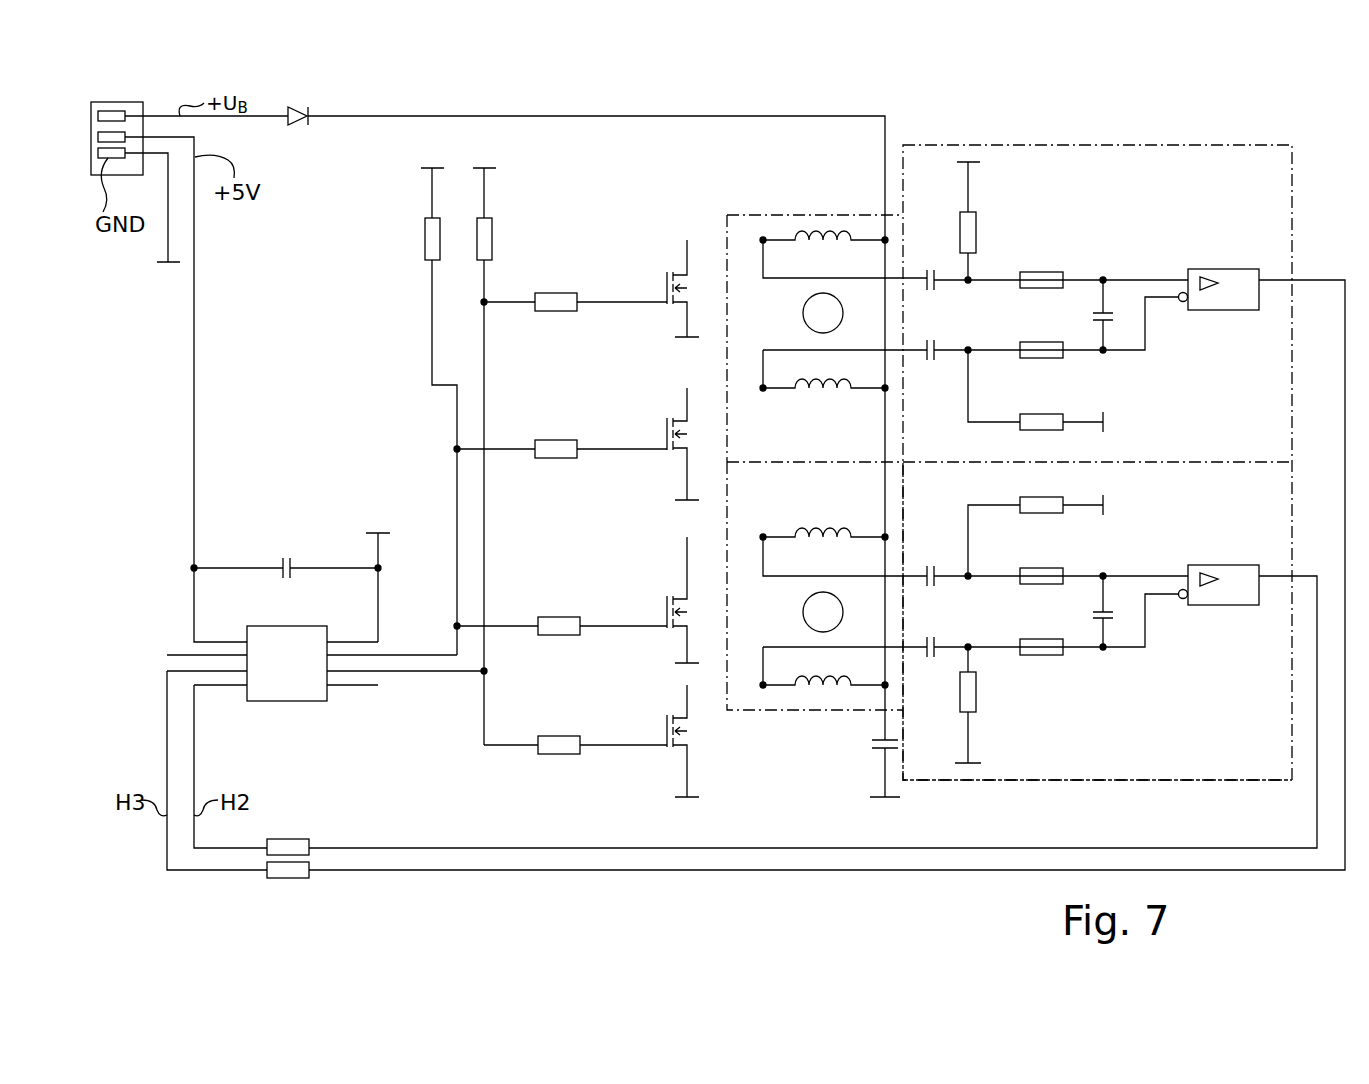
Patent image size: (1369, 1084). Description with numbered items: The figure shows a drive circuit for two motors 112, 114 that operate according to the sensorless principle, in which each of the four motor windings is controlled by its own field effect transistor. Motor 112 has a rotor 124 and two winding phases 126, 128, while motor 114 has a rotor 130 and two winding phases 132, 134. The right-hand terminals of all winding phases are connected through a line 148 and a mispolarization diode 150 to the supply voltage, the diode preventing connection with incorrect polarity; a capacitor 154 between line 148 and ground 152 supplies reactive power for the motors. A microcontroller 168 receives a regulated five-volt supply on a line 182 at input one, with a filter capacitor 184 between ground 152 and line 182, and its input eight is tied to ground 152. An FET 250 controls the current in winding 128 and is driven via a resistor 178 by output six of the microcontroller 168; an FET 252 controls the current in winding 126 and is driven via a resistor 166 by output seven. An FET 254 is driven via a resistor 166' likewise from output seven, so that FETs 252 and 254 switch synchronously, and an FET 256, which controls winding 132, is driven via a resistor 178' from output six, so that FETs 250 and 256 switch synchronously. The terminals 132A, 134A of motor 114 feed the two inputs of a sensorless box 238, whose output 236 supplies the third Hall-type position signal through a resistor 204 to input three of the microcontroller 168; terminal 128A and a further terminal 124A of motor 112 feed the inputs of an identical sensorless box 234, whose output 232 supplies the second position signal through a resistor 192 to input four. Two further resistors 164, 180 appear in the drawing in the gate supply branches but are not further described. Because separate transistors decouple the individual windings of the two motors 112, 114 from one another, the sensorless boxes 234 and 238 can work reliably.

The motor 112 is at (797, 712).
The motor 114 is at (803, 215).
The rotor 124 is at (837, 624).
The tap of second winding 124A is at (763, 537).
The winding phase 126 is at (828, 538).
The winding phase 128 is at (828, 685).
The terminal 128A is at (763, 690).
The rotor 130 is at (838, 324).
The winding phase 132 is at (826, 242).
The terminal 132A is at (763, 240).
The winding phase 134 is at (828, 389).
The terminal 134A is at (763, 388).
The line 148 is at (655, 116).
The diode 150 is at (298, 126).
The ground 152 is at (168, 234).
The capacitor 154 is at (880, 744).
The resistor 164 is at (425, 240).
The resistor 166 is at (562, 588).
The resistor 166' is at (562, 414).
The microcontroller (μC) 168 is at (283, 701).
The resistor 178 is at (575, 709).
The resistor 178' is at (575, 280).
The resistor 180 is at (492, 240).
The line 182 is at (195, 418).
The filter capacitor 184 is at (290, 560).
The resistor 192 is at (288, 847).
The resistor 204 is at (288, 878).
The output 232 is at (1290, 576).
The sensorless box 234 is at (1105, 780).
The output 236 is at (1290, 278).
The sensorless box 238 is at (1058, 145).
The FET 250 is at (666, 735).
The FET 252 is at (666, 616).
The FET 254 is at (666, 438).
The FET 256 is at (666, 290).